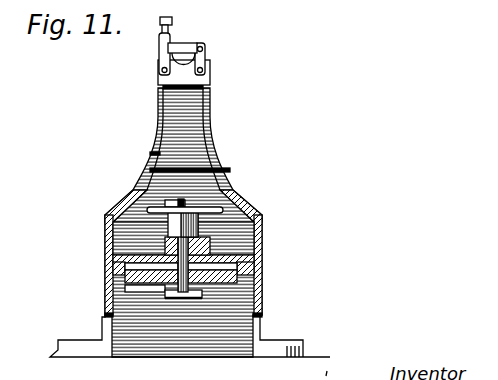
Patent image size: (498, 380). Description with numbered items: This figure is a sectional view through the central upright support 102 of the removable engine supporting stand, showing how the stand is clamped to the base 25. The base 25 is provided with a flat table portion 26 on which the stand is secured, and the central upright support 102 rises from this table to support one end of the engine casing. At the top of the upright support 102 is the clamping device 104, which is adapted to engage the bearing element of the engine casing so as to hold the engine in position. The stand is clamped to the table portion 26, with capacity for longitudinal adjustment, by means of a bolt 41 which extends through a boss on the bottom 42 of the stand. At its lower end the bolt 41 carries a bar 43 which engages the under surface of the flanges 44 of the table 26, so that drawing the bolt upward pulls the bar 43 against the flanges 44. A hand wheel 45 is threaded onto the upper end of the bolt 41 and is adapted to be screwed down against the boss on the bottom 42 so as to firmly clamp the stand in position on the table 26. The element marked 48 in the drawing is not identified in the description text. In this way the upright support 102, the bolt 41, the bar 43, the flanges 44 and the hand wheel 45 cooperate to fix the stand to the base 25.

The clamping device 104 is at (186, 44).
The central upright support 102 is at (212, 118).
The hand wheel 45 is at (185, 197).
The bottom of the stand 42 is at (199, 230).
The bolt 41 is at (183, 238).
The plate 48 is at (262, 259).
The table portion 26 is at (104, 283).
The base 25 is at (261, 294).
The flanges of the table 44 is at (144, 300).
The bar 43 is at (182, 307).